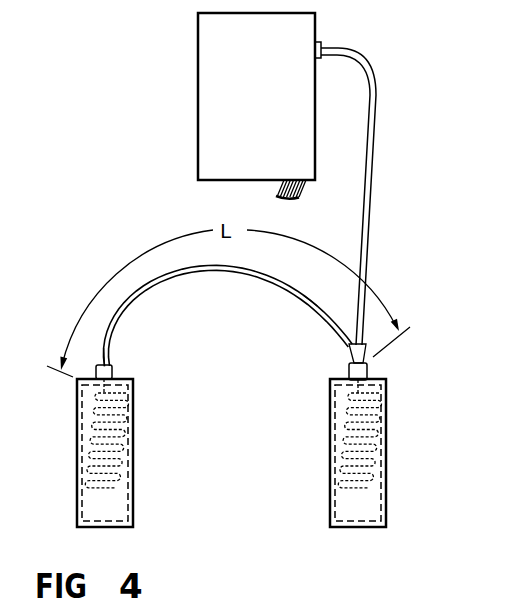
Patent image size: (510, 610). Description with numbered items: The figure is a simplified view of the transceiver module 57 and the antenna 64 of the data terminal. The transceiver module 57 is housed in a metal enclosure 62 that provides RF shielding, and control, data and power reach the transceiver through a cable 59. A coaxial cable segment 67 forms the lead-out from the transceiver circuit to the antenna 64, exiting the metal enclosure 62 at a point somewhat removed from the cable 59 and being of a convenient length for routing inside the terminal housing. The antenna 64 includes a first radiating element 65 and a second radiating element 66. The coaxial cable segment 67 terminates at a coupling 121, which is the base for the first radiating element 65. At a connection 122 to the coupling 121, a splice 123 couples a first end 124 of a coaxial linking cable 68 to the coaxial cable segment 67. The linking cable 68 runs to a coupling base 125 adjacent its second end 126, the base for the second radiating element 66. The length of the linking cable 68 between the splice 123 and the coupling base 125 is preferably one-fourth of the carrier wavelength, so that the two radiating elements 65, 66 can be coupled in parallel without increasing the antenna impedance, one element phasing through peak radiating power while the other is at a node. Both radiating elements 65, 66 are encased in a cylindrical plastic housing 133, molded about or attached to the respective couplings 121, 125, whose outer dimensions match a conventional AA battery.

The transceiver module 57 is at (153, 179).
The cable 59 is at (301, 194).
The metal enclosure 62 is at (197, 126).
The antenna 64 is at (246, 453).
The first radiating element 65 is at (382, 452).
The second radiating element 66 is at (90, 452).
The coaxial cable segment 67 is at (364, 59).
The coaxial linking cable 68 is at (233, 273).
The coupling 121 is at (376, 374).
The connection 122 is at (349, 372).
The splice 123 is at (350, 351).
The first end 124 is at (313, 308).
The coupling base 125 is at (119, 379).
The second end 126 is at (119, 334).
The cylindrical plastic housing 133 is at (132, 496).